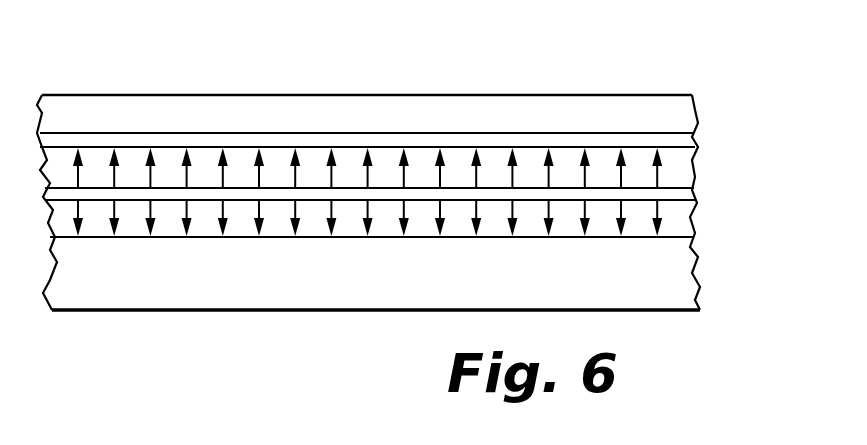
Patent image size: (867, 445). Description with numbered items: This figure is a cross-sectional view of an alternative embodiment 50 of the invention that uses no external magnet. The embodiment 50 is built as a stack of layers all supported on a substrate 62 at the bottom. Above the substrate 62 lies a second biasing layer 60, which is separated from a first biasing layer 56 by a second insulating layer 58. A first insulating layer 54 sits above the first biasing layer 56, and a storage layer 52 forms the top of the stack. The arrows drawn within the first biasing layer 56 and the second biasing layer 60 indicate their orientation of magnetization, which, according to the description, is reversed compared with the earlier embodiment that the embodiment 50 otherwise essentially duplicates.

The alternative embodiment 50 is at (532, 80).
The storage layer 52 is at (667, 110).
The first insulating layer 54 is at (679, 138).
The first biasing layer 56 is at (676, 158).
The second insulating layer 58 is at (680, 195).
The second biasing layer 60 is at (676, 217).
The substrate 62 is at (676, 253).